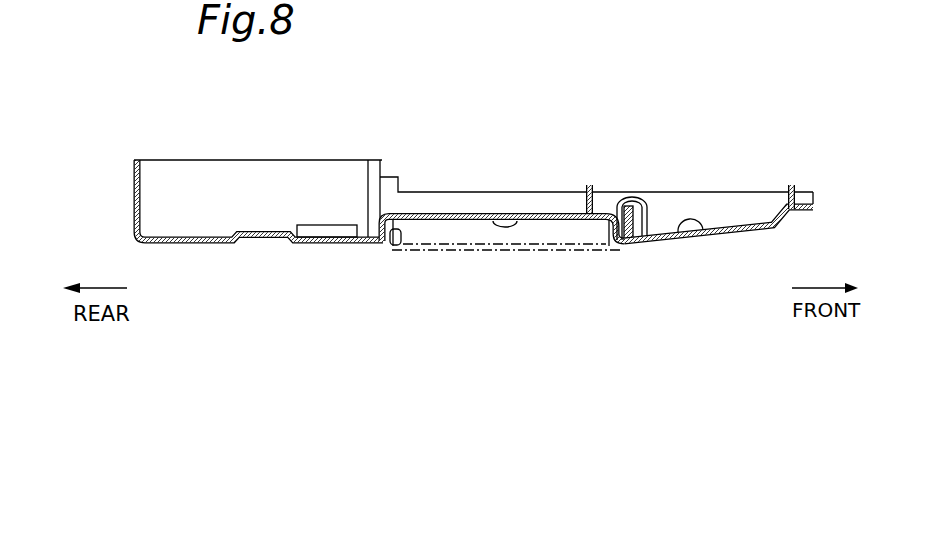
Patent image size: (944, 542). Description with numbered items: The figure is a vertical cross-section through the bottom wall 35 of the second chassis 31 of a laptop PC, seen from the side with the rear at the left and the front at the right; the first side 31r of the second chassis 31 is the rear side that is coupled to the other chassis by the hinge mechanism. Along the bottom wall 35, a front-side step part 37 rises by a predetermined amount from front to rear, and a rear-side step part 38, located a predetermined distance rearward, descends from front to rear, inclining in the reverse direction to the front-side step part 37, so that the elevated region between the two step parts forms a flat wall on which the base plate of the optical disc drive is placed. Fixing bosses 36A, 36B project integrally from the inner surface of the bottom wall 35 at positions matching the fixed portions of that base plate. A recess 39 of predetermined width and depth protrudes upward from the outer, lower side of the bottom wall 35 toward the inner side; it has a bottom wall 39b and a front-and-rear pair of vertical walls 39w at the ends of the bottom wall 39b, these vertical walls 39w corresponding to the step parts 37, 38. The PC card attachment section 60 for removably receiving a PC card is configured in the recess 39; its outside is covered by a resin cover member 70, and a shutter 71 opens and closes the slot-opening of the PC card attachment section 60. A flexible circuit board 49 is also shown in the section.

The second chassis 31 is at (356, 257).
The first side of the second chassis 31r is at (133, 223).
The bottom wall 35 is at (700, 237).
The fixing boss 36A is at (591, 184).
The fixing boss 36B is at (792, 186).
The front-side step part 37 is at (646, 220).
The rear-side step part 38 is at (375, 224).
The recess 39 is at (439, 219).
The bottom wall of the recess 39b is at (497, 215).
The vertical walls 39w is at (392, 251).
The flexible circuit board 49 is at (646, 197).
The PC card attachment section 60 is at (477, 259).
The cover member 70 is at (533, 254).
The shutter 71 is at (498, 245).